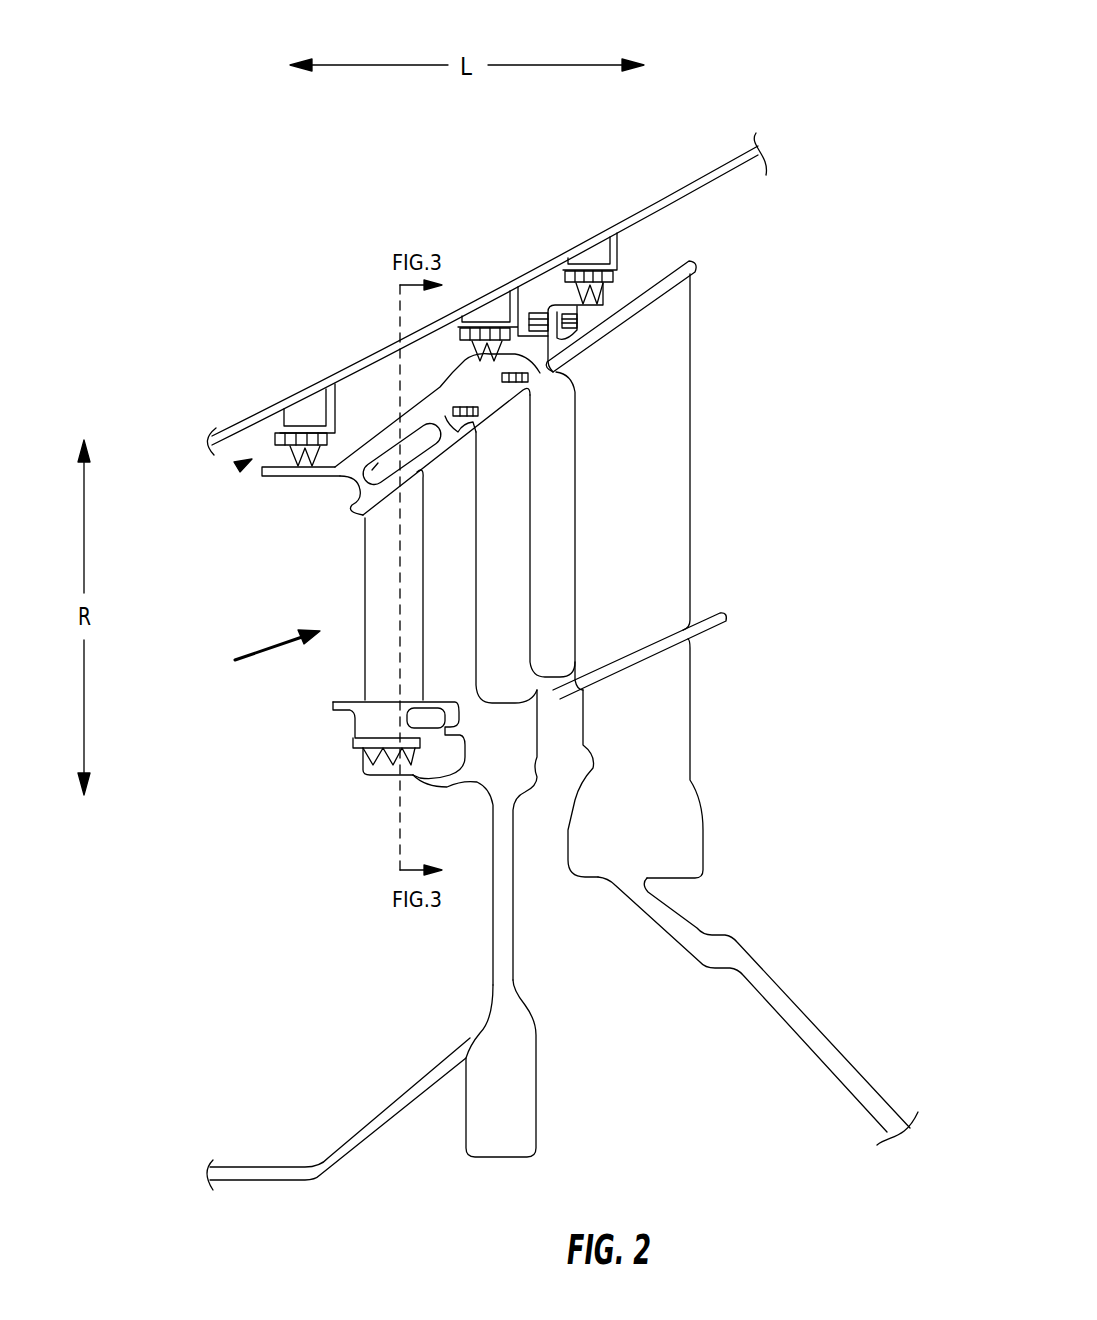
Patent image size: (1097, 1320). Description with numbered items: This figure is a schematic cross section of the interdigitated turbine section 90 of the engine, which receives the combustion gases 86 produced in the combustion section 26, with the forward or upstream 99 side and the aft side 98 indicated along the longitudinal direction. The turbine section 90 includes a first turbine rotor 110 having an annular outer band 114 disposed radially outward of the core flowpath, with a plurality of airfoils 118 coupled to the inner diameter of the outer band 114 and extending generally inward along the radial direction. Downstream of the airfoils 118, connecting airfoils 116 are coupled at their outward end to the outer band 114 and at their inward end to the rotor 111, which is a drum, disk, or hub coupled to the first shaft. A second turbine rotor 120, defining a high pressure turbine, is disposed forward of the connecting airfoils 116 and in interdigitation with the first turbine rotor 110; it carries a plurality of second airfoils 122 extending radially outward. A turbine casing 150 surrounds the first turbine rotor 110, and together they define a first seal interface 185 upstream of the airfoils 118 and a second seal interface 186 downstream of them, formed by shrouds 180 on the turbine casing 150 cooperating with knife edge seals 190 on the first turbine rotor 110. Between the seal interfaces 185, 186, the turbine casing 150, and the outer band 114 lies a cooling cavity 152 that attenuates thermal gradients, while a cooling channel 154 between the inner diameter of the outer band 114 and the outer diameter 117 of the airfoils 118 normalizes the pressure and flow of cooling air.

The combustion section 26 is at (181, 644).
The combustion gases 86 is at (262, 632).
The turbine section 90 is at (724, 80).
The aft region 98 is at (828, 452).
The forward or upstream 99 is at (148, 586).
The first turbine rotor 110 is at (662, 771).
The rotor 111 is at (832, 1054).
The outer band 114 is at (420, 405).
The connecting airfoil 116 is at (643, 510).
The outer diameter 117 is at (362, 520).
The airfoils 118 is at (415, 574).
The second turbine rotor 120 is at (492, 932).
The second airfoils 122 is at (523, 570).
The turbine casing 150 is at (472, 305).
The cooling cavity 152 is at (377, 425).
The cooling channel 154 is at (354, 487).
The shrouds 180 is at (284, 424).
The first seal interface 185 is at (240, 466).
The second seal interface 186 is at (524, 312).
The knife edge seals 190 is at (295, 466).